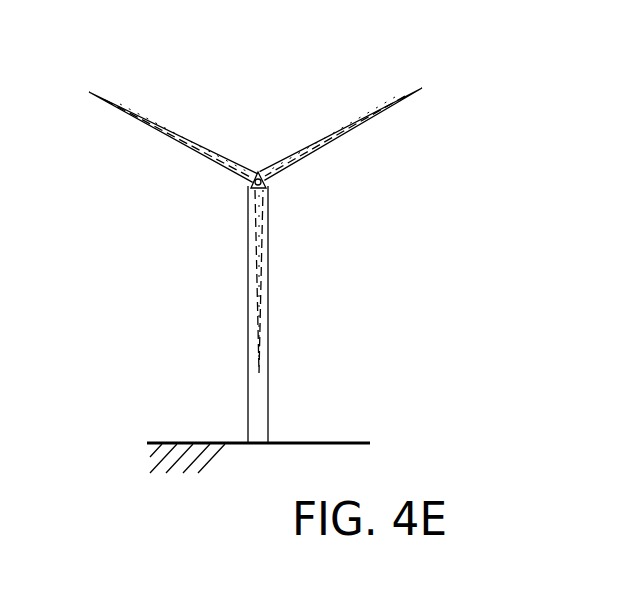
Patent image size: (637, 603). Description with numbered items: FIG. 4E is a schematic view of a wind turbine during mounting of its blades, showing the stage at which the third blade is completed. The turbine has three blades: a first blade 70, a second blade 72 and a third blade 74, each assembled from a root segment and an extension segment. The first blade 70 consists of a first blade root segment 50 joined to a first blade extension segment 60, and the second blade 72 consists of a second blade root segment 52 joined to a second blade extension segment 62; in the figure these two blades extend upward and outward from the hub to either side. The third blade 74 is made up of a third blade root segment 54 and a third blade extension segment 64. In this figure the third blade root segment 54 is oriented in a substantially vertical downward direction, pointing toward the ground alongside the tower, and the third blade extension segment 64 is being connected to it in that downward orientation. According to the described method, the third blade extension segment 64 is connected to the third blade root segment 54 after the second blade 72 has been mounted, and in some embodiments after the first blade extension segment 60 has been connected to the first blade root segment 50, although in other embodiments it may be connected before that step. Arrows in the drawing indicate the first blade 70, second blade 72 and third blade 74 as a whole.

The first blade root segment 50 is at (315, 138).
The second blade root segment 52 is at (180, 150).
The third blade root segment 54 is at (249, 264).
The first blade extension segment 60 is at (398, 92).
The second blade extension segment 62 is at (107, 107).
The third blade extension segment 64 is at (253, 337).
The first blade 70 is at (327, 90).
The second blade 72 is at (118, 163).
The third blade 74 is at (208, 302).